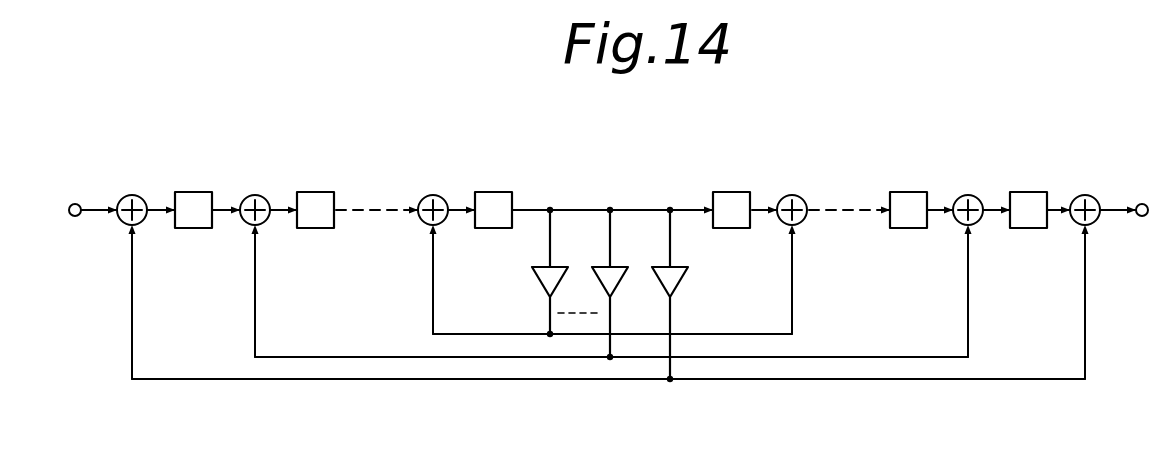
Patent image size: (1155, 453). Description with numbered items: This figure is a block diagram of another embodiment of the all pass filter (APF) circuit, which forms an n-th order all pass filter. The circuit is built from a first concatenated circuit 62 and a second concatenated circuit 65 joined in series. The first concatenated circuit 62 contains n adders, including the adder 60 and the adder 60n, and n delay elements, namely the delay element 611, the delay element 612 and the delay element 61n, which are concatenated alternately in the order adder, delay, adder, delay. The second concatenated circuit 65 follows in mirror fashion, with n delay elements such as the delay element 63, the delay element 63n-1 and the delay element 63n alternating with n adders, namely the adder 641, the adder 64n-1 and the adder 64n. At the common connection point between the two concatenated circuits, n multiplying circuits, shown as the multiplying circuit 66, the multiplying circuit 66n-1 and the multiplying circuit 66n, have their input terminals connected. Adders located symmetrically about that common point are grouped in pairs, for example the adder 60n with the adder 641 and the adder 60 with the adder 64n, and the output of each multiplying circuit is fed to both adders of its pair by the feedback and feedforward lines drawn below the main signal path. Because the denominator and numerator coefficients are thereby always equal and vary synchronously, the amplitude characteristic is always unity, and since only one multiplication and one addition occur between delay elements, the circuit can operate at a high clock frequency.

The adder 60 is at (133, 194).
The adder 60n is at (433, 194).
The delay element 611 is at (194, 229).
The delay element 612 is at (316, 229).
The delay element 61n is at (494, 229).
The first concatenated circuit 62 is at (357, 157).
The delay element 63 is at (735, 229).
The delay element 63n-1 is at (908, 229).
The delay element 63n is at (1028, 229).
The adder 641 is at (792, 194).
The adder 64n-1 is at (968, 194).
The adder 64n is at (1090, 192).
The second concatenated circuit 65 is at (975, 144).
The multiplying circuit 66 is at (558, 265).
The multiplying circuit 66n-1 is at (612, 258).
The multiplying circuit 66n is at (688, 282).